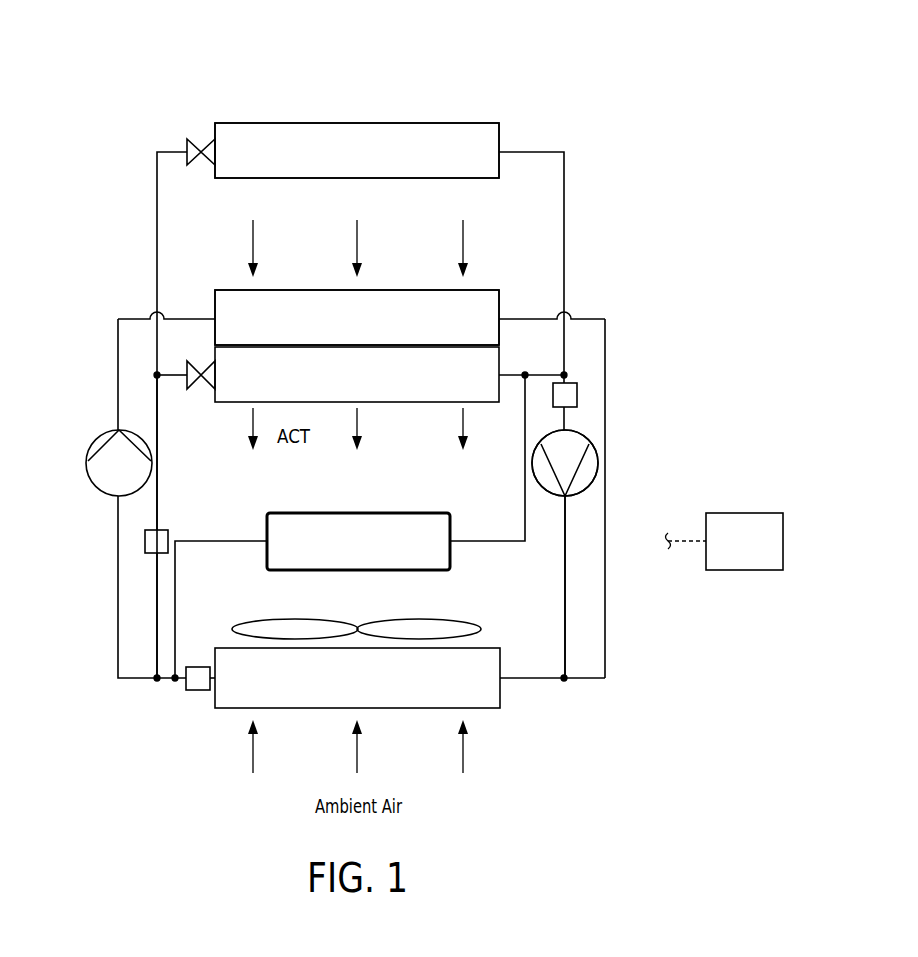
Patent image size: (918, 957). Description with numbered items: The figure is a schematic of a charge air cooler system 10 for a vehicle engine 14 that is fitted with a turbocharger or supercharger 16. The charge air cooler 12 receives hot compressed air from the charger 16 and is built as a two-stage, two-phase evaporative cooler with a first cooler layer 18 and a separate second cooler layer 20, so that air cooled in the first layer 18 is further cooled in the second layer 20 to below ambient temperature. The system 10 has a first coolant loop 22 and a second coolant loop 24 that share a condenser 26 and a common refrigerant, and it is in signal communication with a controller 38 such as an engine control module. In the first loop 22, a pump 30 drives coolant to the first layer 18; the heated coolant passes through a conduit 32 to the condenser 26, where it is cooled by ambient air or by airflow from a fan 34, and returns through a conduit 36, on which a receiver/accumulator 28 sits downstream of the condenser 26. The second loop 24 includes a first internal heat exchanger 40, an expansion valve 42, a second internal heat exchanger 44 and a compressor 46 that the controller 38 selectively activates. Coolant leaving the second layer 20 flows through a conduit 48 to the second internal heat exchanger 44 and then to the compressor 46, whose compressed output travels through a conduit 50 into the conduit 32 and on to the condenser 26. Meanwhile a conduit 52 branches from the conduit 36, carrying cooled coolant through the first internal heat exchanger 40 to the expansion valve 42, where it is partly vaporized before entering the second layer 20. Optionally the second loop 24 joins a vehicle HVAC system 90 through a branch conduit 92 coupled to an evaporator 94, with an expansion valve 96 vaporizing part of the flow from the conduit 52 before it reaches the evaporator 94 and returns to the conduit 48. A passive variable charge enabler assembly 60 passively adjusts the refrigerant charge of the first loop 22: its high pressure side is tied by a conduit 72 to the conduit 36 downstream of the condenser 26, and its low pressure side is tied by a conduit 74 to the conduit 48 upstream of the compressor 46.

The charge air cooler system 10 is at (630, 84).
The charge air cooler 12 is at (228, 290).
The vehicle engine 14 is at (132, 255).
The turbocharger or supercharger 16 is at (486, 237).
The first cooler layer 18 is at (490, 298).
The second cooler layer 20 is at (457, 395).
The first coolant loop 22 is at (650, 339).
The second coolant loop 24 is at (590, 636).
The condenser 26 is at (500, 692).
The receiver/accumulator 28 is at (198, 692).
The pump 30 is at (93, 445).
The conduit 32 is at (606, 470).
The fan 34 is at (480, 629).
The conduit 36 is at (118, 580).
The controller 38 is at (745, 513).
The first internal heat exchanger 40 is at (152, 555).
The expansion valve 42 is at (195, 386).
The second internal heat exchanger 44 is at (580, 395).
The compressor 46 is at (575, 440).
The conduit 48 is at (543, 372).
The conduit 50 is at (567, 572).
The conduit 52 is at (157, 495).
The passive variable charge enabler assembly 60 is at (380, 512).
The conduit 72 is at (177, 612).
The conduit 74 is at (525, 518).
The vehicle HVAC system 90 is at (385, 96).
The branch conduit 92 is at (157, 165).
The evaporator 94 is at (482, 123).
The expansion valve 96 is at (195, 138).